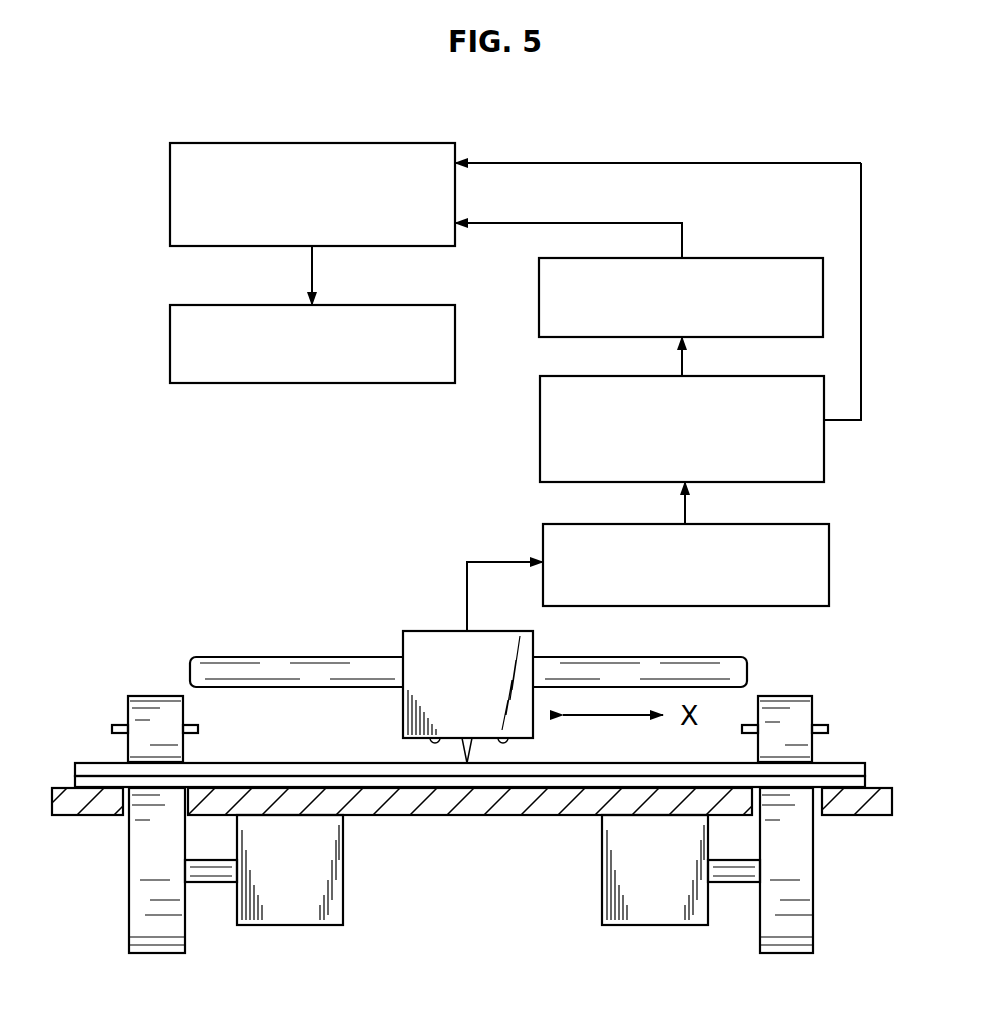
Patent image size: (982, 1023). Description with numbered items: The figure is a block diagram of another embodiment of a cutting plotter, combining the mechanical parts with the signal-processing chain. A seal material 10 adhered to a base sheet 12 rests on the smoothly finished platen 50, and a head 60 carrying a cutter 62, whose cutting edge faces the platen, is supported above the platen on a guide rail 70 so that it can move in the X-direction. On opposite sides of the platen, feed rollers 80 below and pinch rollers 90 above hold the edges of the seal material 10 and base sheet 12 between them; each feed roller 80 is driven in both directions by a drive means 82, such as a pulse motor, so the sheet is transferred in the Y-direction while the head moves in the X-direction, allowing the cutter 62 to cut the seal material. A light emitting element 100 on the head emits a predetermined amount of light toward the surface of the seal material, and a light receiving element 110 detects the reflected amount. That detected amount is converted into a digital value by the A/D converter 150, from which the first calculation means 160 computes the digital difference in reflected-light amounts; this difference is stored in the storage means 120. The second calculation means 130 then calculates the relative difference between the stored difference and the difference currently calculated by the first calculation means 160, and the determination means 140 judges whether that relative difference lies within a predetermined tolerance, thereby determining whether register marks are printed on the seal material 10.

The seal material 10 is at (867, 763).
The base sheet 12 is at (868, 783).
The platen 50 is at (465, 815).
The head 60 is at (410, 631).
The cutter 62 is at (476, 739).
The guide rail 70 is at (283, 657).
The feed roller 80 is at (130, 945).
The drive means 82 is at (285, 925).
The pinch roller 90 is at (138, 696).
The light emitting element 100 is at (505, 742).
The light receiving element 110 is at (433, 742).
The storage means 120 is at (730, 258).
The second calculation means 130 is at (383, 143).
The determination means 140 is at (378, 305).
The A/D converter 150 is at (755, 524).
The first calculation means 160 is at (745, 376).